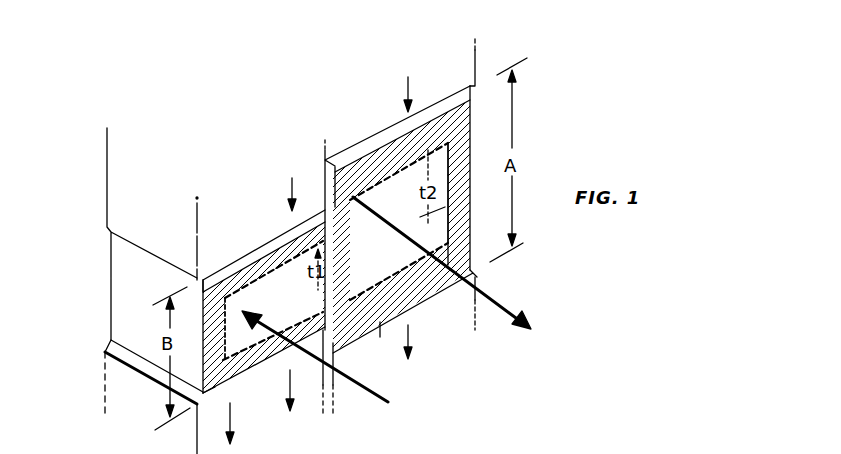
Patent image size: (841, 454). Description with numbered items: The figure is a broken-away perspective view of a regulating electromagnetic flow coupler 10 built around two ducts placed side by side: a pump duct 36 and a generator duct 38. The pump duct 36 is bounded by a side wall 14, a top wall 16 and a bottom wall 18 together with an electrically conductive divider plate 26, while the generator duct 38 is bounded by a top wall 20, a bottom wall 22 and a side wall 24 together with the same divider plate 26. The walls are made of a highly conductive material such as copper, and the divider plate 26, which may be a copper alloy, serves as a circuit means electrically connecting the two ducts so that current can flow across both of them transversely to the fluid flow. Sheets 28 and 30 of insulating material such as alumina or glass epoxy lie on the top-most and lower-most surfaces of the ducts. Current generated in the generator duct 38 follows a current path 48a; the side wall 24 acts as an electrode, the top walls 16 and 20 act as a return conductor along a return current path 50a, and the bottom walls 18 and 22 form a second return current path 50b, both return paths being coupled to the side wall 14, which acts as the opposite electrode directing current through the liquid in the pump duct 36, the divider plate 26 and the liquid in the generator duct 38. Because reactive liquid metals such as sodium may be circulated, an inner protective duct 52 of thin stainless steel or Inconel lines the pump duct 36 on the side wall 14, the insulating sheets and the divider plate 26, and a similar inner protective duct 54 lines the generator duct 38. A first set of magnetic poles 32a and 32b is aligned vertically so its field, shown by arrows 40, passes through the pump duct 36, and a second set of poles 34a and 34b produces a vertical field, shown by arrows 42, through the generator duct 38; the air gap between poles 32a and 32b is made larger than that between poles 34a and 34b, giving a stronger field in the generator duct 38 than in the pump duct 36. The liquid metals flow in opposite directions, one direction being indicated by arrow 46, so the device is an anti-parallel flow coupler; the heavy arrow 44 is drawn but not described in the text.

The regulating EM flow coupler 10 is at (99, 136).
The side wall 14 is at (470, 213).
The top wall 16 is at (388, 144).
The bottom wall 18 is at (417, 305).
The top wall 20 is at (277, 239).
The bottom wall 22 is at (231, 391).
The side wall 24 is at (205, 364).
The electrically conductive divider plate 26 is at (352, 274).
The sheet of insulating material 28 is at (369, 204).
The sheet of insulating material 30 is at (253, 349).
The magnetic pole 32a is at (475, 47).
The magnetic pole 32b is at (460, 331).
The magnetic pole 34a is at (114, 182).
The magnetic pole 34b is at (114, 384).
The pump duct 36 is at (385, 232).
The generator duct 38 is at (300, 293).
The arrows indicating magnetic field 40 is at (410, 83).
The arrows indicating magnetic field 42 is at (232, 246).
The force direction 44 is at (498, 297).
The arrow indicating flow direction 46 is at (387, 402).
The current path 48a is at (303, 288).
The return current path 50a is at (289, 234).
The second return current path 50b is at (388, 341).
The inner protective duct 52 is at (448, 170).
The inner protective duct 54 is at (241, 349).